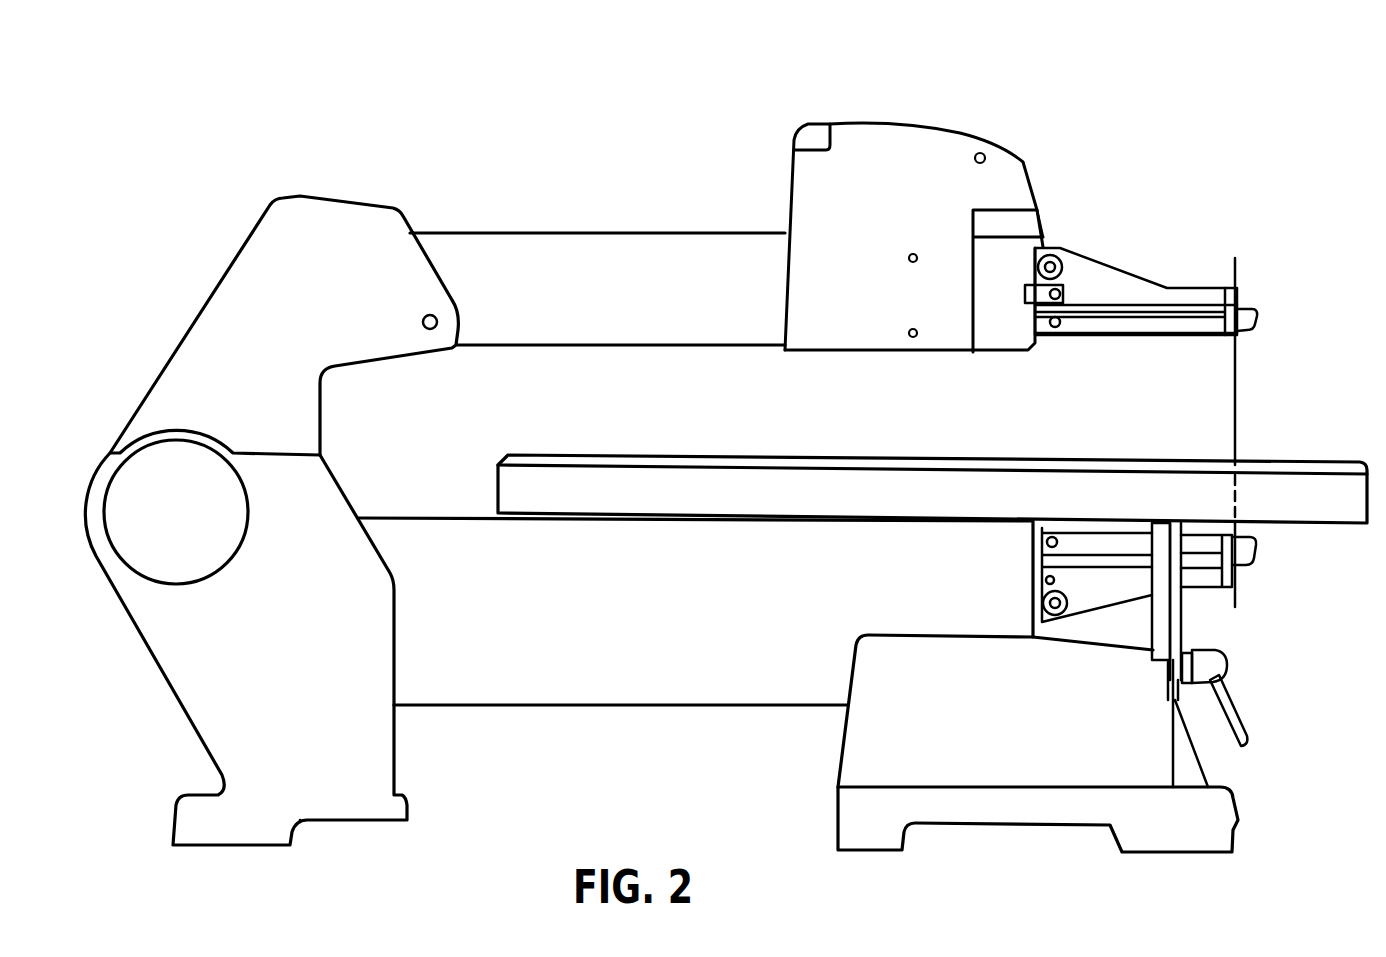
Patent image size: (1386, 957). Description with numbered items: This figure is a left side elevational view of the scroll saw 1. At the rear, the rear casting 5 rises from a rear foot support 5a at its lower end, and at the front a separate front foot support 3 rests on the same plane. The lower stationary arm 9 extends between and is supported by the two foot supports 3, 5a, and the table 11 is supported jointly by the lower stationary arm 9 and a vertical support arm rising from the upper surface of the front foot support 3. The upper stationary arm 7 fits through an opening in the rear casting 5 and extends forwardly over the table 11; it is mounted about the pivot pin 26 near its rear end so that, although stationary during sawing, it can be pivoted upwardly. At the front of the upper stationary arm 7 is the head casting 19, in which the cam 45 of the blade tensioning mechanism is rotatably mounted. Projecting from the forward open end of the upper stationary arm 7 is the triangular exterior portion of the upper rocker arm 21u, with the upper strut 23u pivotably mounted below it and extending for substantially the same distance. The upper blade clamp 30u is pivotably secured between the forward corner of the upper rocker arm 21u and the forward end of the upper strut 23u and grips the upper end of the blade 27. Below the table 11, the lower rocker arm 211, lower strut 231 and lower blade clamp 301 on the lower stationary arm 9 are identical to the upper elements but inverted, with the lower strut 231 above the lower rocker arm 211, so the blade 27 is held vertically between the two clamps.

The scroll saw 1 is at (444, 118).
The front foot support 3 is at (1047, 813).
The rear casting 5 is at (186, 351).
The rear foot support 5a is at (218, 828).
The upper stationary arm 7 is at (628, 252).
The lower stationary arm 9 is at (733, 692).
The table 11 is at (853, 506).
The head casting 19 is at (1003, 168).
The upper rocker arm 21u is at (1127, 273).
The upper strut 23u is at (1103, 328).
The pivot pin 26 is at (440, 325).
The blade 27 is at (1237, 420).
The upper blade clamp 30u is at (1253, 313).
The cam 45 is at (1046, 237).
The lower rocker arm 211 is at (1213, 593).
The lower strut 231 is at (1193, 550).
The lower blade clamp 301 is at (1253, 557).